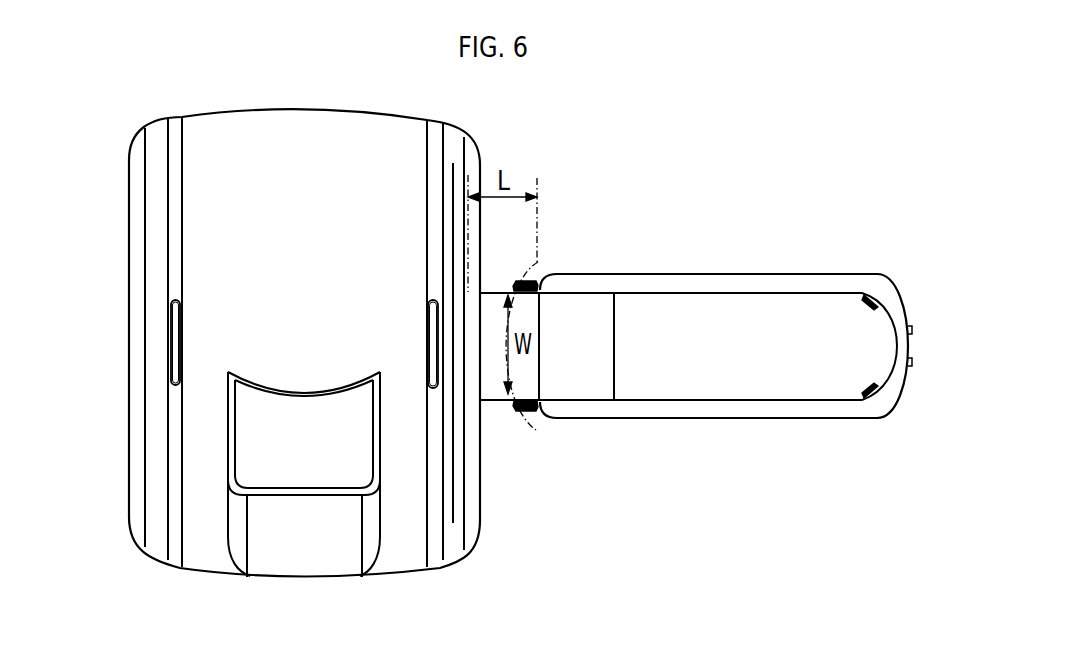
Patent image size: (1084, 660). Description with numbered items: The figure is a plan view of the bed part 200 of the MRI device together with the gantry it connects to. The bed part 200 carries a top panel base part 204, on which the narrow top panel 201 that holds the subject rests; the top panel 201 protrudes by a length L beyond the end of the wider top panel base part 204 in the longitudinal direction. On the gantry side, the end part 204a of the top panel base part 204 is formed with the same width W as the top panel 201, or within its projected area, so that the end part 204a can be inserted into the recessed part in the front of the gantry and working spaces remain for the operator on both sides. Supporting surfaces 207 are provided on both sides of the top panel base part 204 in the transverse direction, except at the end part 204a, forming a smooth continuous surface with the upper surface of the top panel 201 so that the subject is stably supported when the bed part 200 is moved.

The bed part 200 is at (283, 166).
The top panel base part 204 is at (815, 273).
The supporting surfaces 207 is at (651, 283).
The top panel 201 is at (731, 312).
The end part of the top panel base part 204a is at (491, 398).